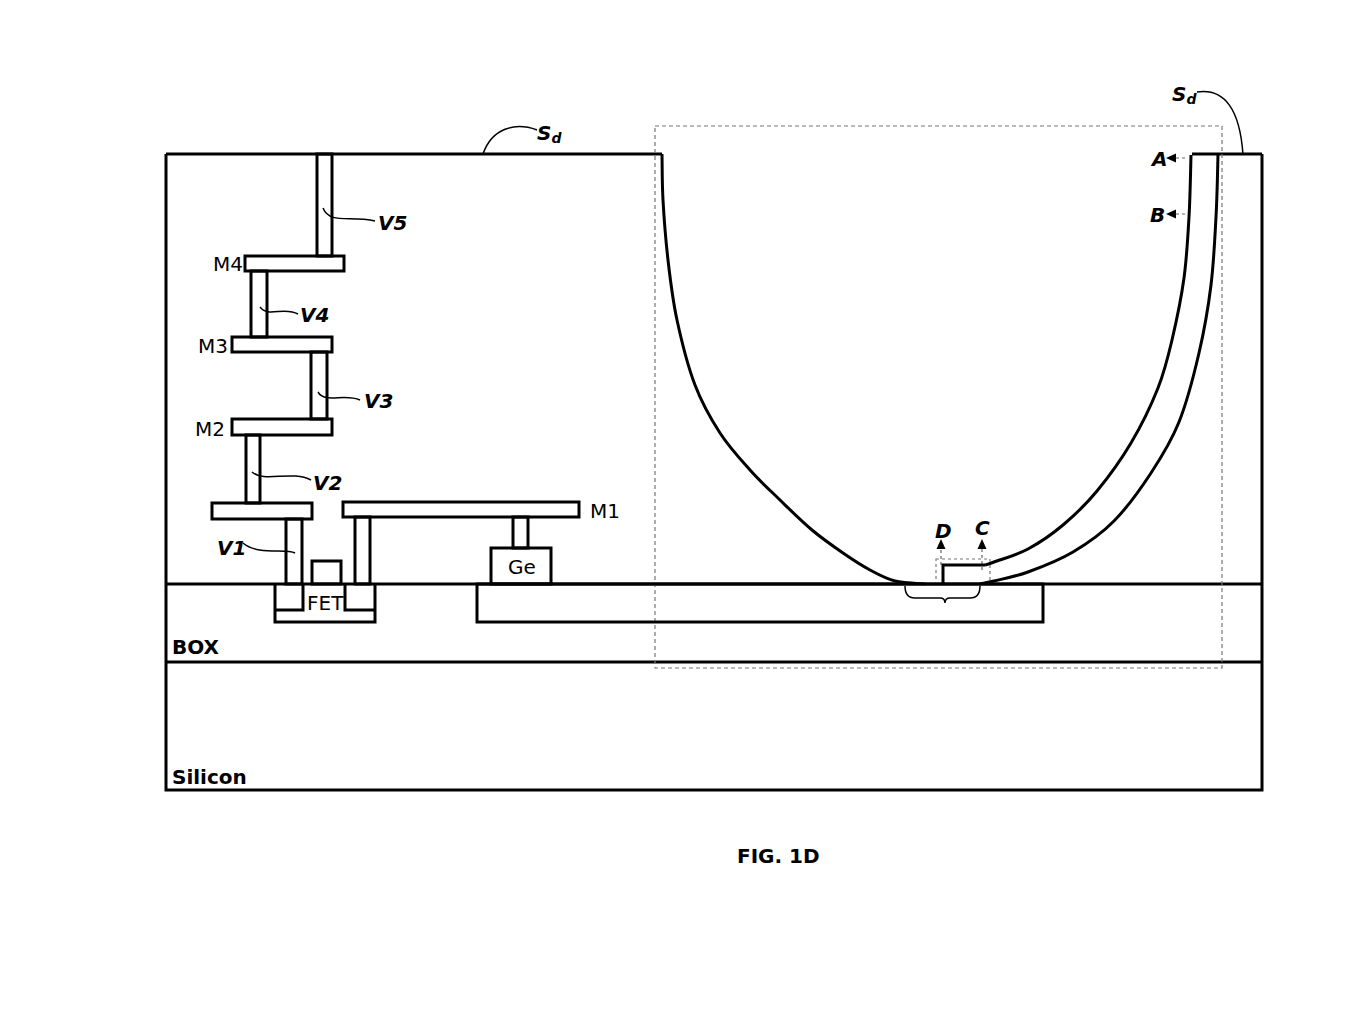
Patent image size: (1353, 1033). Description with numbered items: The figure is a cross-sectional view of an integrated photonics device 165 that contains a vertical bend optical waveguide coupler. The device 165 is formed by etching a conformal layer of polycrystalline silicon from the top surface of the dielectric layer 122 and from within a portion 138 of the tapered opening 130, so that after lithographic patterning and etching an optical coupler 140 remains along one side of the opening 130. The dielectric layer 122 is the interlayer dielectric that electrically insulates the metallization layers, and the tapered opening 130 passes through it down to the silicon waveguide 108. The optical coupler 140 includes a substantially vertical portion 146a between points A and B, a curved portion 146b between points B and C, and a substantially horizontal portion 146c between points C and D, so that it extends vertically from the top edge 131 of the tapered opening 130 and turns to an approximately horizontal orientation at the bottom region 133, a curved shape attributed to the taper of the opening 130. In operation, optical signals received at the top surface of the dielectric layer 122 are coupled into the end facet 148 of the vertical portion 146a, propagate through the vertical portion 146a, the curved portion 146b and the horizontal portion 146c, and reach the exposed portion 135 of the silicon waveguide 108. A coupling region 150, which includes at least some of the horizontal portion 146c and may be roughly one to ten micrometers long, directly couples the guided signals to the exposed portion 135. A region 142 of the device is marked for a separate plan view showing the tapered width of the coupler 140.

The integrated photonics device 165 is at (182, 97).
The dielectric layer 122 is at (211, 187).
The top edge 131 is at (663, 151).
The region 142 is at (748, 125).
The tapered opening 130 is at (912, 185).
The portion of opening 138 is at (666, 197).
The optical coupler 140 is at (1122, 409).
The bottom region 133 is at (928, 580).
The substantially vertical portion 146a is at (1197, 188).
The curved portion 146b is at (1158, 394).
The substantially horizontal portion 146c is at (968, 565).
The end facet 148 is at (1204, 167).
The coupling region 150 is at (993, 568).
The exposed portion of silicon waveguide 135 is at (945, 603).
The silicon waveguide 108 is at (759, 626).